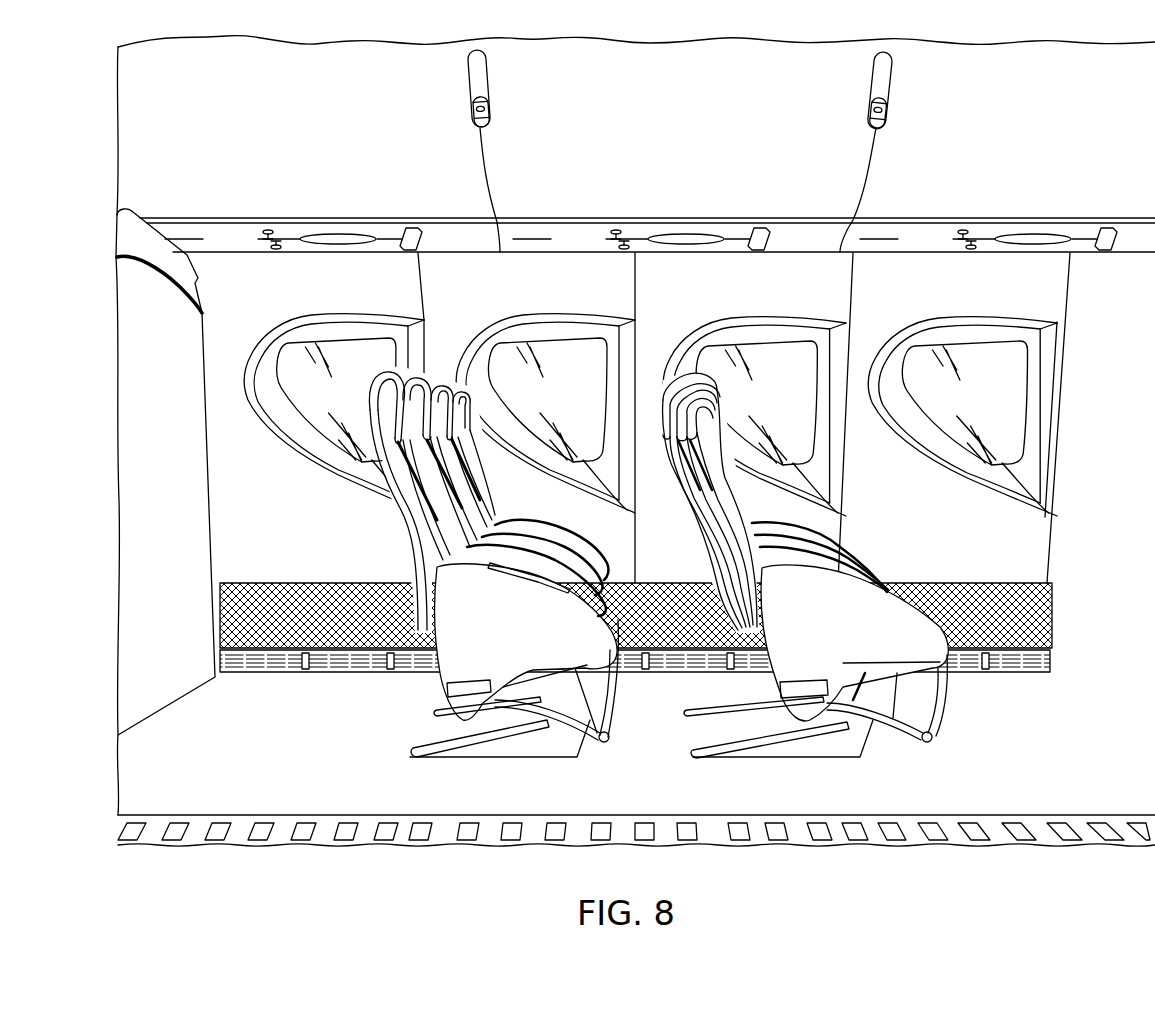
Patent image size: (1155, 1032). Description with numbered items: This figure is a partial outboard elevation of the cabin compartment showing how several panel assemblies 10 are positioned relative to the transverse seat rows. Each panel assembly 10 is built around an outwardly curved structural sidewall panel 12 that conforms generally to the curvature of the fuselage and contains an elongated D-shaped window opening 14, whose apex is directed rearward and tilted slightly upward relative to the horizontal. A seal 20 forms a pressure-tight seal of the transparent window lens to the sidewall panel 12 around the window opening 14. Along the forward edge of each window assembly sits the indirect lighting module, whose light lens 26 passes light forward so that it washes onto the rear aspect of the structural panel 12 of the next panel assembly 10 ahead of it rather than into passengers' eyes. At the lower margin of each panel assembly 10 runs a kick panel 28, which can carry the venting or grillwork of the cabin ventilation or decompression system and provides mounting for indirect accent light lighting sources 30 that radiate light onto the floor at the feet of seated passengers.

The panel assembly 10 is at (826, 528).
The sidewall panel 12 is at (790, 265).
The window opening 14 is at (797, 364).
The seal 20 is at (797, 318).
The light lens 26 is at (845, 462).
The kick panel 28 is at (995, 598).
The indirect accent light lighting source 30 is at (990, 668).